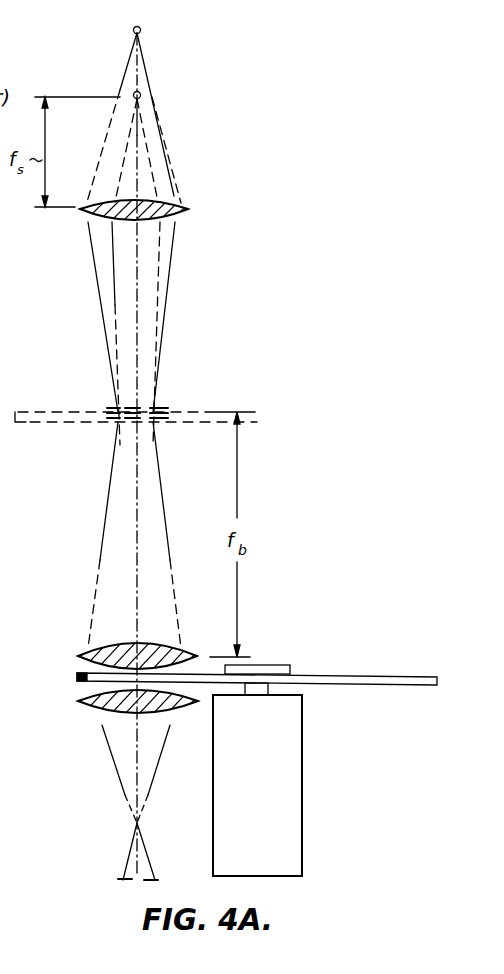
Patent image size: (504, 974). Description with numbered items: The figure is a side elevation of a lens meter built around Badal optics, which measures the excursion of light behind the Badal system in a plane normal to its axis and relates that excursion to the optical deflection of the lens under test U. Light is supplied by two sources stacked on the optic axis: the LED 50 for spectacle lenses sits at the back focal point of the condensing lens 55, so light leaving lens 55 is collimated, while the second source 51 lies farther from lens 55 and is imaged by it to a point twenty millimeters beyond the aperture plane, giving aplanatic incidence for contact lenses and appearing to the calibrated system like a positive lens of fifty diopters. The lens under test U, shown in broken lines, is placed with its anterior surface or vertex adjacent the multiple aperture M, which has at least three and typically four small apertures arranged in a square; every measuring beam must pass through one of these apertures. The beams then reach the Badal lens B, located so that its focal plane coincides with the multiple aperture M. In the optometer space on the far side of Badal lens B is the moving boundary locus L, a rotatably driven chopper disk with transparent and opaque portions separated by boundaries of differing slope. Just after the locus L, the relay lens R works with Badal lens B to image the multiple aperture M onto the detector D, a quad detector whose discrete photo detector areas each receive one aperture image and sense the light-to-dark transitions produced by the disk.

The second light source 51 is at (141, 29).
The LED for spectacle lenses 50 is at (141, 94).
The condensing lens 55 is at (190, 210).
The lens under test U is at (59, 402).
The multiple aperture M is at (158, 413).
The Badal lens B is at (78, 655).
The relay lens R is at (76, 701).
The moving boundary locus L is at (366, 674).
The detector D is at (125, 879).